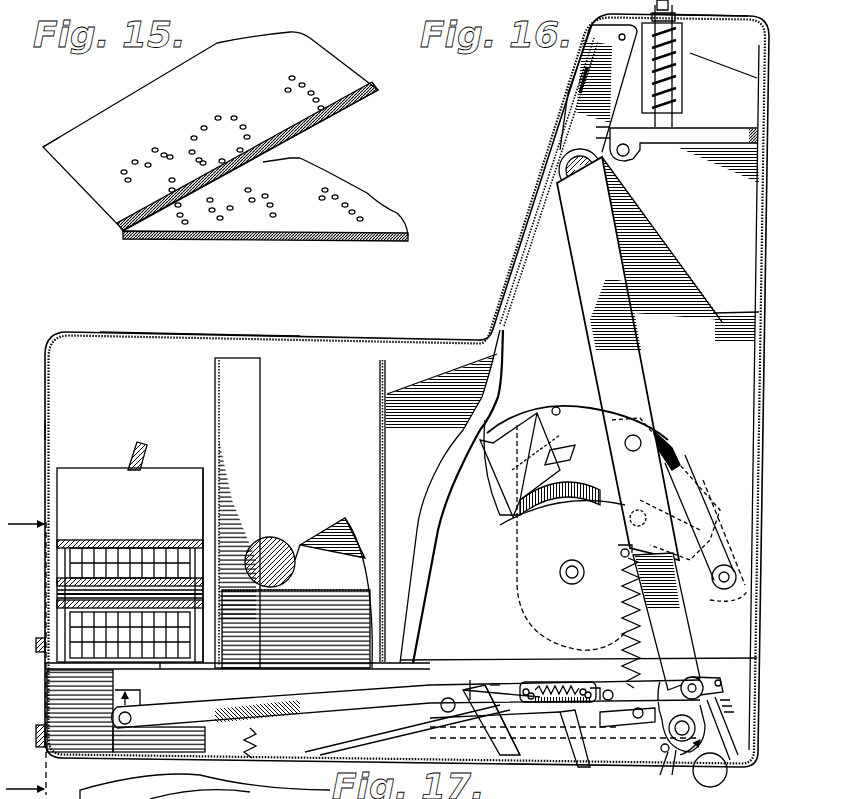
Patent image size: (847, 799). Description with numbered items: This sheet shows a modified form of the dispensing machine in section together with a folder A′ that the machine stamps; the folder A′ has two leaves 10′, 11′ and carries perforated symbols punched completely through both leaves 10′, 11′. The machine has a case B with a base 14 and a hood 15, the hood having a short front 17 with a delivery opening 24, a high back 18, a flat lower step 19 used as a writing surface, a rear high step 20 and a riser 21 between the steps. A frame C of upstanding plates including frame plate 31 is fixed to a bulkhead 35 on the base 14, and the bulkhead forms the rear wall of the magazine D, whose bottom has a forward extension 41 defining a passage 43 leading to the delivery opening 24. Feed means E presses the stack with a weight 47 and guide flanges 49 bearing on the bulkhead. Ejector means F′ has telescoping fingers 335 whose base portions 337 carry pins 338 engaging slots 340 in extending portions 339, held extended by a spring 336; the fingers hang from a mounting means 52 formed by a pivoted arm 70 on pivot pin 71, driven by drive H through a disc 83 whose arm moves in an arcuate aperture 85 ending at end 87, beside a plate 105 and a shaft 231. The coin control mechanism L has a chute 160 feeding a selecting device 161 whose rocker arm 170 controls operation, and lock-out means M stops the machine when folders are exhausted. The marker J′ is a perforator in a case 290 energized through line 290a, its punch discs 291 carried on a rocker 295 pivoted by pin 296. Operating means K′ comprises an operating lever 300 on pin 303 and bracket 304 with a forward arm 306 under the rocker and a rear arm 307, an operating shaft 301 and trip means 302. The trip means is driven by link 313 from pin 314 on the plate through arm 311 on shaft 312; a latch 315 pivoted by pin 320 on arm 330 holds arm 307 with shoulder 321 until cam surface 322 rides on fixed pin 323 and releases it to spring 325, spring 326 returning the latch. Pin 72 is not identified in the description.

In FIG. 15, the leaf 10′ is at (318, 57).
In FIG. 15, the leaf 11′ is at (350, 190).
In FIG. 15, the folder A′ is at (95, 118).
In FIG. 16, the folder A′ is at (305, 615).
In FIG. 16, the base 14 is at (485, 762).
In FIG. 16, the hood 15 is at (769, 400).
In FIG. 16, the front 17 is at (44, 425).
In FIG. 16, the back 18 is at (762, 478).
In FIG. 16, the lower step 19 is at (285, 335).
In FIG. 16, the rear high step 20 is at (750, 14).
In FIG. 16, the riser 21 is at (535, 203).
In FIG. 16, the delivery opening 24 is at (40, 668).
In FIG. 16, the frame plate 31 is at (650, 247).
In FIG. 16, the bulkhead 35 is at (380, 385).
In FIG. 16, the forward extension 41 is at (92, 670).
In FIG. 16, the passage 43 is at (165, 670).
In FIG. 16, the weight 47 is at (278, 538).
In FIG. 16, the guide flange 49 is at (344, 520).
In FIG. 16, the mounting means 52 is at (642, 345).
In FIG. 16, the pivoted arm 70 is at (640, 377).
In FIG. 16, the pivot pin 71 is at (565, 170).
In FIG. 16, the spring pin 72 is at (622, 549).
In FIG. 16, the disc 83 is at (545, 512).
In FIG. 16, the arcuate aperture 85 is at (555, 408).
In FIG. 16, the end of aperture 87 is at (500, 487).
In FIG. 16, the plate 105 is at (515, 553).
In FIG. 16, the coin receiving chute 160 is at (745, 78).
In FIG. 16, the coin selecting and ejecting device 161 is at (713, 147).
In FIG. 16, the arm 170 is at (550, 443).
In FIG. 16, the shaft 231 is at (572, 584).
In FIG. 16, the case 290 is at (87, 468).
In FIG. 16, the line 290a is at (130, 452).
In FIG. 16, the punch disc 291 is at (90, 640).
In FIG. 16, the rocker 295 is at (125, 548).
In FIG. 16, the pivot pin 296 is at (60, 592).
In FIG. 16, the operating lever 300 is at (275, 712).
In FIG. 16, the operating shaft 301 is at (701, 776).
In FIG. 16, the trip means 302 is at (720, 672).
In FIG. 16, the pin 303 is at (428, 712).
In FIG. 16, the bracket 304 is at (565, 738).
In FIG. 16, the arm 306 is at (407, 726).
In FIG. 16, the arm 307 is at (558, 704).
In FIG. 16, the arm 311 is at (760, 608).
In FIG. 16, the shaft 312 is at (755, 745).
In FIG. 16, the link 313 is at (708, 550).
In FIG. 16, the pin 314 is at (660, 515).
In FIG. 16, the latch 315 is at (703, 722).
In FIG. 16, the pivot pin 320 is at (685, 685).
In FIG. 16, the shoulder 321 is at (650, 725).
In FIG. 16, the cam surface 322 is at (663, 754).
In FIG. 16, the fixed pin 323 is at (657, 774).
In FIG. 16, the spring 325 is at (262, 758).
In FIG. 16, the spring 326 is at (735, 706).
In FIG. 16, the arm 330 is at (742, 690).
In FIG. 16, the ejector finger 335 is at (478, 688).
In FIG. 16, the spring 336 is at (560, 665).
In FIG. 16, the base portion 337 is at (625, 690).
In FIG. 16, the pin 338 is at (528, 700).
In FIG. 16, the extending portion 339 is at (422, 663).
In FIG. 16, the slot 340 is at (512, 685).
In FIG. 16, the case B is at (560, 100).
In FIG. 16, the frame C is at (453, 365).
In FIG. 16, the magazine D is at (262, 405).
In FIG. 16, the feed means E is at (312, 525).
In FIG. 16, the ejector means F′ is at (497, 680).
In FIG. 16, the drive H is at (675, 462).
In FIG. 16, the marker J′ is at (180, 470).
In FIG. 16, the operating means K′ is at (510, 740).
In FIG. 16, the coin control mechanism L is at (732, 224).
In FIG. 16, the lock-out means M is at (428, 590).